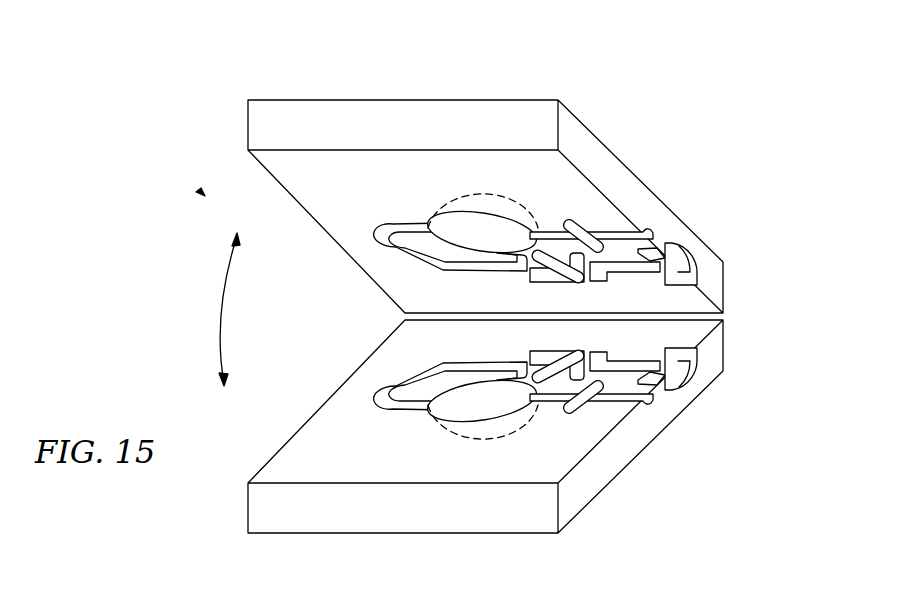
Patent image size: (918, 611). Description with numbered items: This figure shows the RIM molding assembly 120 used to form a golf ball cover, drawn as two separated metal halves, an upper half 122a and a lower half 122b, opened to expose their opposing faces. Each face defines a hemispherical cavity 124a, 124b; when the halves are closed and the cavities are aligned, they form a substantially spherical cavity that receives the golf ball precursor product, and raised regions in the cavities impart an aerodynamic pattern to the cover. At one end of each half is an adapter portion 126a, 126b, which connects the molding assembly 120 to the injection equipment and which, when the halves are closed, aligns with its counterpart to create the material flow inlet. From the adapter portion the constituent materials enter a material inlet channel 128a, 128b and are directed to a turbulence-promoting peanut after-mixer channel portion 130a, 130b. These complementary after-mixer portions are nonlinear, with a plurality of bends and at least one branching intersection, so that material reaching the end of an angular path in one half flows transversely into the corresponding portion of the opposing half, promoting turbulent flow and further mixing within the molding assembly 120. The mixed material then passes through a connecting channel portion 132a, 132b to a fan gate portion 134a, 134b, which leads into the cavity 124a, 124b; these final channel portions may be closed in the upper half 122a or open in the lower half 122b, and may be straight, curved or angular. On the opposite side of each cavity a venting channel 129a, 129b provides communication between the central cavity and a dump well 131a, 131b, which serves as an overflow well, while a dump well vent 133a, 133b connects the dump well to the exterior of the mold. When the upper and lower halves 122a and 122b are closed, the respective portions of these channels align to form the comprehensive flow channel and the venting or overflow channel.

The RIM molding assembly 120 is at (205, 196).
The upper half 122a is at (289, 100).
The lower half 122b is at (305, 535).
The hemispherical cavity 124a is at (474, 208).
The hemispherical cavity 124b is at (477, 440).
The adapter portion 126a is at (680, 270).
The adapter portion 126b is at (680, 373).
The material inlet channel 128a is at (630, 268).
The material inlet channel 128b is at (622, 366).
The venting channel 129a is at (543, 232).
The venting channel 129b is at (553, 398).
The after-mixer channel portion 130a is at (637, 247).
The after-mixer channel portion 130b is at (651, 378).
The dump well 131a is at (582, 228).
The dump well 131b is at (575, 408).
The connecting channel portion 132a is at (410, 262).
The connecting channel portion 132b is at (397, 372).
The dump well vent 133a is at (603, 230).
The dump well vent 133b is at (618, 398).
The fan gate portion 134a is at (425, 222).
The fan gate portion 134b is at (393, 406).